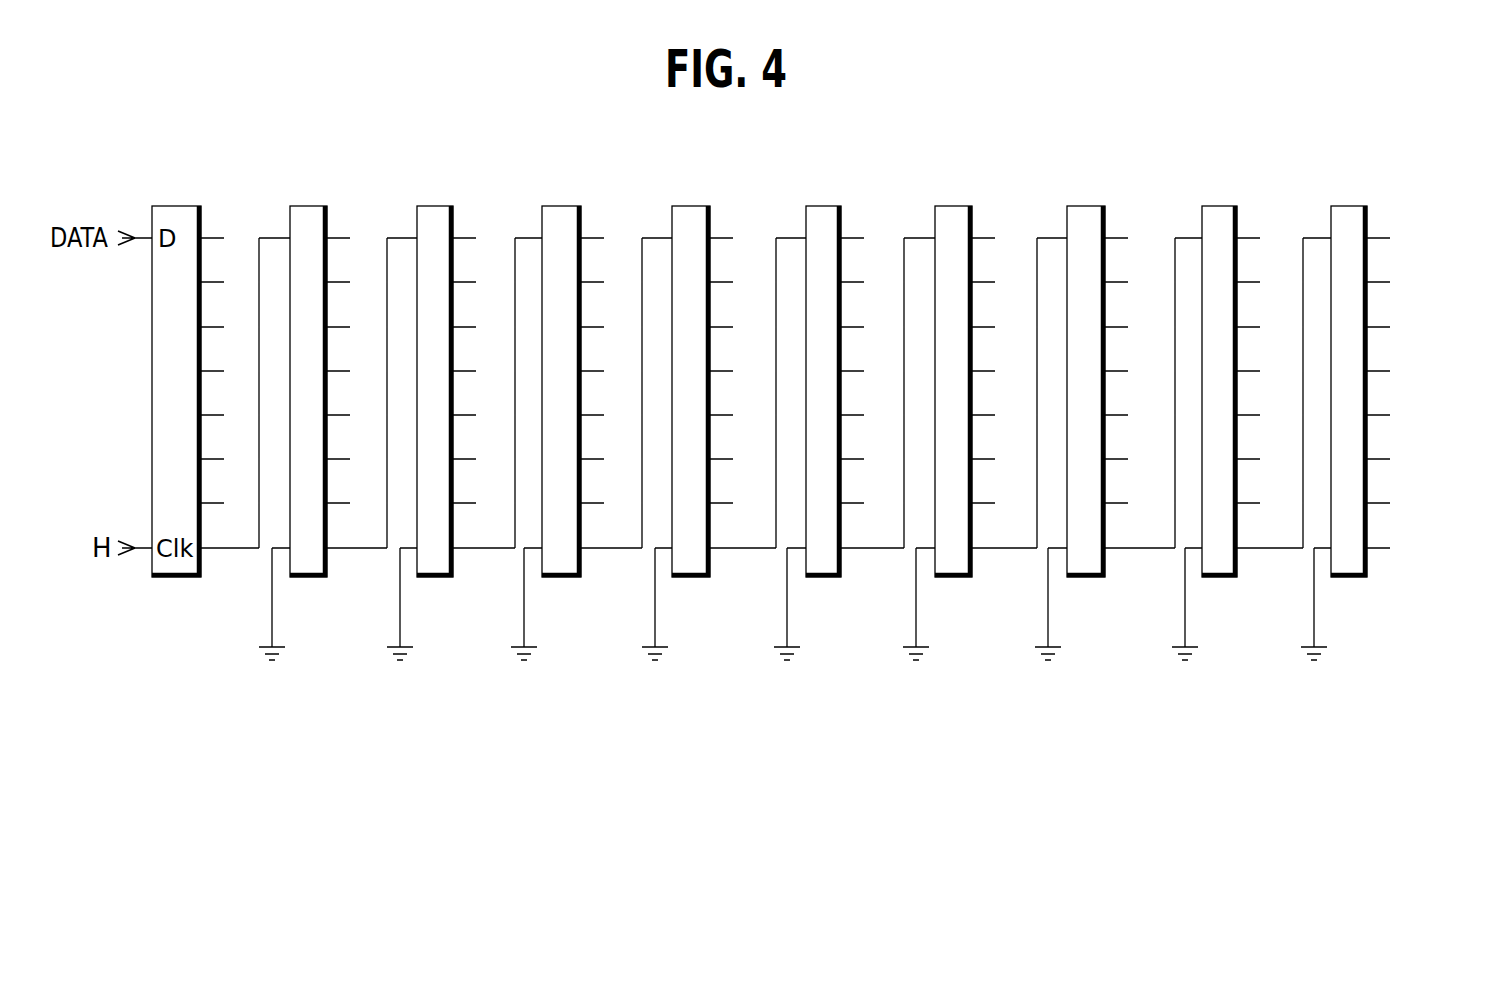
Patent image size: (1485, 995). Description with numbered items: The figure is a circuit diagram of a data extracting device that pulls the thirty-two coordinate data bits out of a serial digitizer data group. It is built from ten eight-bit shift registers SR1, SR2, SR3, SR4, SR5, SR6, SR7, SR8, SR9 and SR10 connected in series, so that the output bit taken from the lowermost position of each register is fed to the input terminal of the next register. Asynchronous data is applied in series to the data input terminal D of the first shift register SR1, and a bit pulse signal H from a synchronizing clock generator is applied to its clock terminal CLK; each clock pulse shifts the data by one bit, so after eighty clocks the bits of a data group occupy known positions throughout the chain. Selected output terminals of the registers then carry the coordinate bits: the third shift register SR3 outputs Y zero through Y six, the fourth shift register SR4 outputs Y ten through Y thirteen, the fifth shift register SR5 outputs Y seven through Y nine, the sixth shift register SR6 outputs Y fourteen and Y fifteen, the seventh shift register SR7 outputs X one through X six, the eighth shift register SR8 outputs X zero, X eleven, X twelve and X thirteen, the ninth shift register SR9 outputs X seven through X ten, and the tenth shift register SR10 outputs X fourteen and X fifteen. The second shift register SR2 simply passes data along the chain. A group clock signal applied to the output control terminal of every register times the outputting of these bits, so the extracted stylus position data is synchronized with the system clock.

The first shift register SR1 is at (176, 206).
The second shift register SR2 is at (308, 206).
The third shift register SR3 is at (435, 206).
The fourth shift register SR4 is at (561, 206).
The fifth shift register SR5 is at (691, 206).
The sixth shift register SR6 is at (823, 206).
The seventh shift register SR7 is at (953, 206).
The eighth shift register SR8 is at (1086, 206).
The ninth shift register SR9 is at (1219, 206).
The tenth shift register SR10 is at (1349, 206).